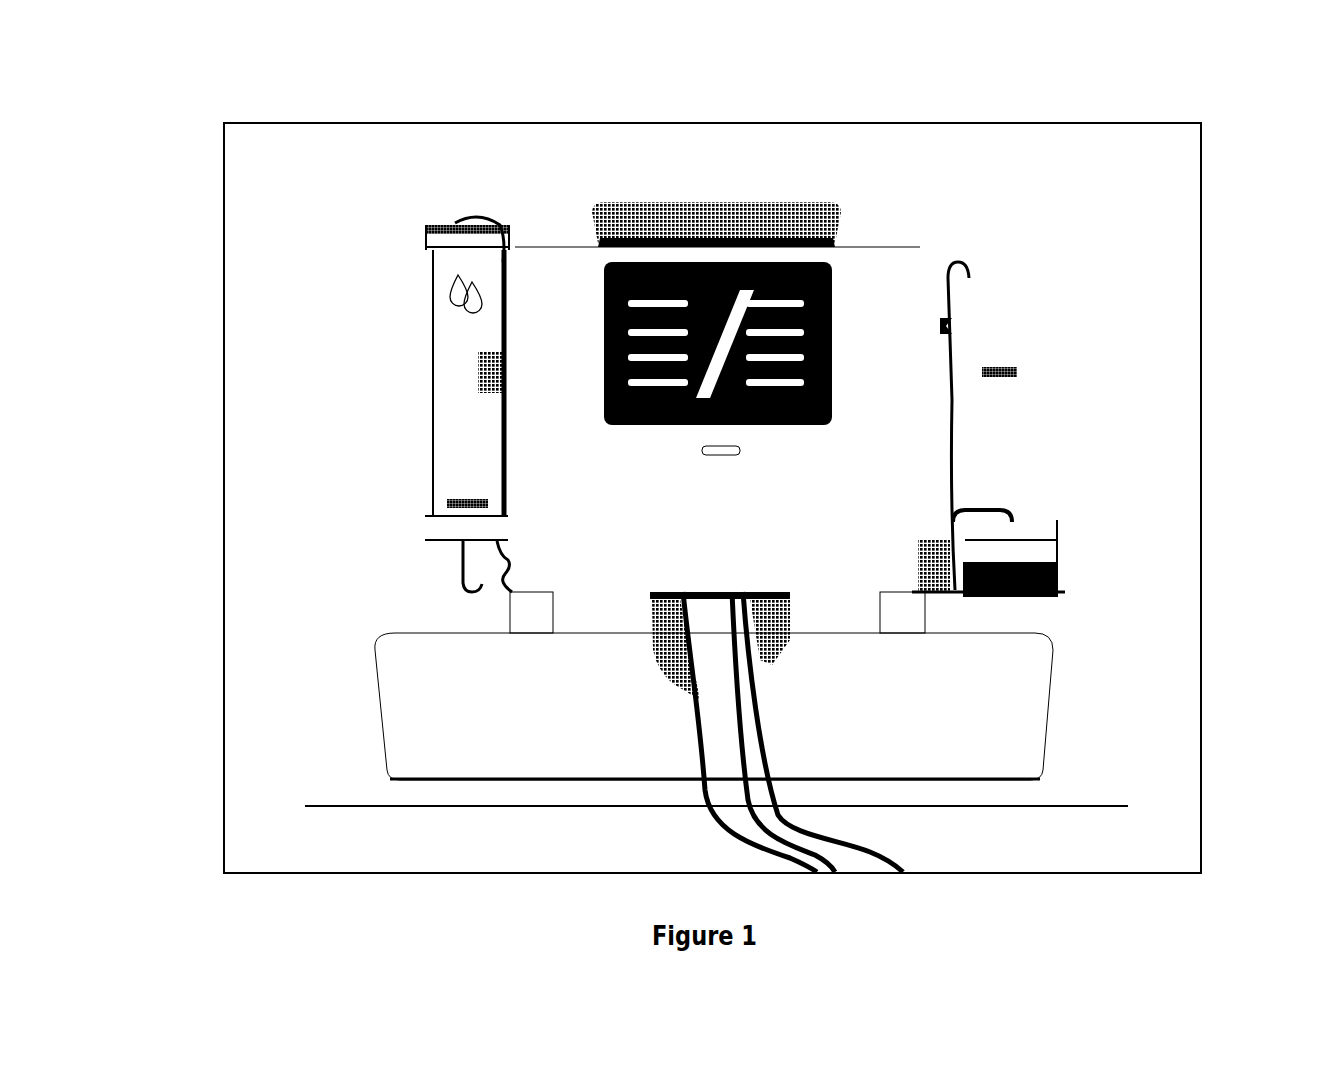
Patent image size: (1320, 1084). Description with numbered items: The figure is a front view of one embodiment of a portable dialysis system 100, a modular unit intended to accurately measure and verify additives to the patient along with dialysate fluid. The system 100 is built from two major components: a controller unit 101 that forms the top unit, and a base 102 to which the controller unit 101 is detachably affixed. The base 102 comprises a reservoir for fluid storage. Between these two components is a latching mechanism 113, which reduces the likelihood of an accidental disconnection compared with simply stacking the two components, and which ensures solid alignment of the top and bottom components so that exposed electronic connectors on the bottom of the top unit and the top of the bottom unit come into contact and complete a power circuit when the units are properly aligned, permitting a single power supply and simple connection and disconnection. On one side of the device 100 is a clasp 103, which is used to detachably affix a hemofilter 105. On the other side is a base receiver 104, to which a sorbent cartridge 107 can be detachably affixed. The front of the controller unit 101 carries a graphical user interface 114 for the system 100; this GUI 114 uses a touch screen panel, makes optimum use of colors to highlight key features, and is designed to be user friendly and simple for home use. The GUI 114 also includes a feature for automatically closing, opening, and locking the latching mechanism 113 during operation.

The portable dialysis system 100 is at (717, 465).
The controller unit 101 is at (706, 233).
The base 102 is at (380, 752).
The clasp 103 is at (465, 378).
The base receiver 104 is at (940, 563).
The hemofilter 105 is at (440, 328).
The sorbent cartridge 107 is at (990, 438).
The latching mechanism 113 is at (518, 595).
The graphical user interface 114 is at (770, 350).